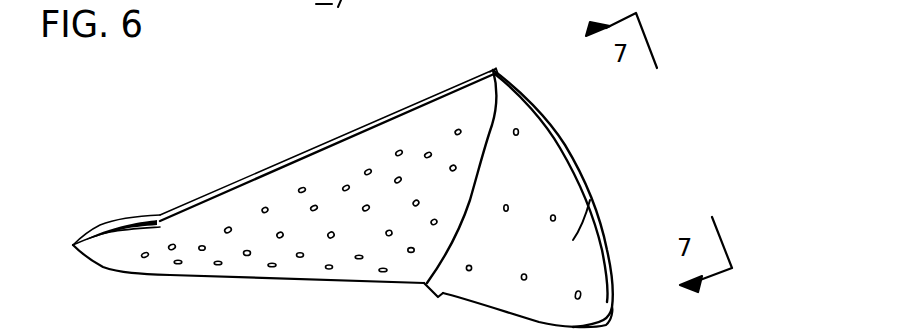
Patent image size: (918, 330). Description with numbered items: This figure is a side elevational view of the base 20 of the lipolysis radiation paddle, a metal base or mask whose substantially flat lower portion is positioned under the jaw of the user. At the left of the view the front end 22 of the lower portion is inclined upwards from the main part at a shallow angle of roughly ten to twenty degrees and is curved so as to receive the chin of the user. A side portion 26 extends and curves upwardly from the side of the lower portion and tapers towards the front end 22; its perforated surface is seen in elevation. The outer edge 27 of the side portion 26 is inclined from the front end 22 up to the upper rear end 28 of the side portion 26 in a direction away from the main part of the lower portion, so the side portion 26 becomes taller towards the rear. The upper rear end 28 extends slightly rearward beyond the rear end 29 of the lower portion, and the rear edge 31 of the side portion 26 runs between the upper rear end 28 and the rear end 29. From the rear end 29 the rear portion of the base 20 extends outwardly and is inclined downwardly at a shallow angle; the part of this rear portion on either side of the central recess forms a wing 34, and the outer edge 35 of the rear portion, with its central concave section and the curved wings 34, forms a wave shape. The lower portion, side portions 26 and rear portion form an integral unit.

The base 20 is at (178, 163).
The front end 22 is at (122, 248).
The side portion 26 is at (288, 210).
The outer edge 27 is at (316, 150).
The upper rear end 28 is at (499, 0).
The rear end 29 is at (423, 285).
The rear edge 31 is at (480, 174).
The wing 34 is at (597, 207).
The outer edge 35 is at (583, 177).